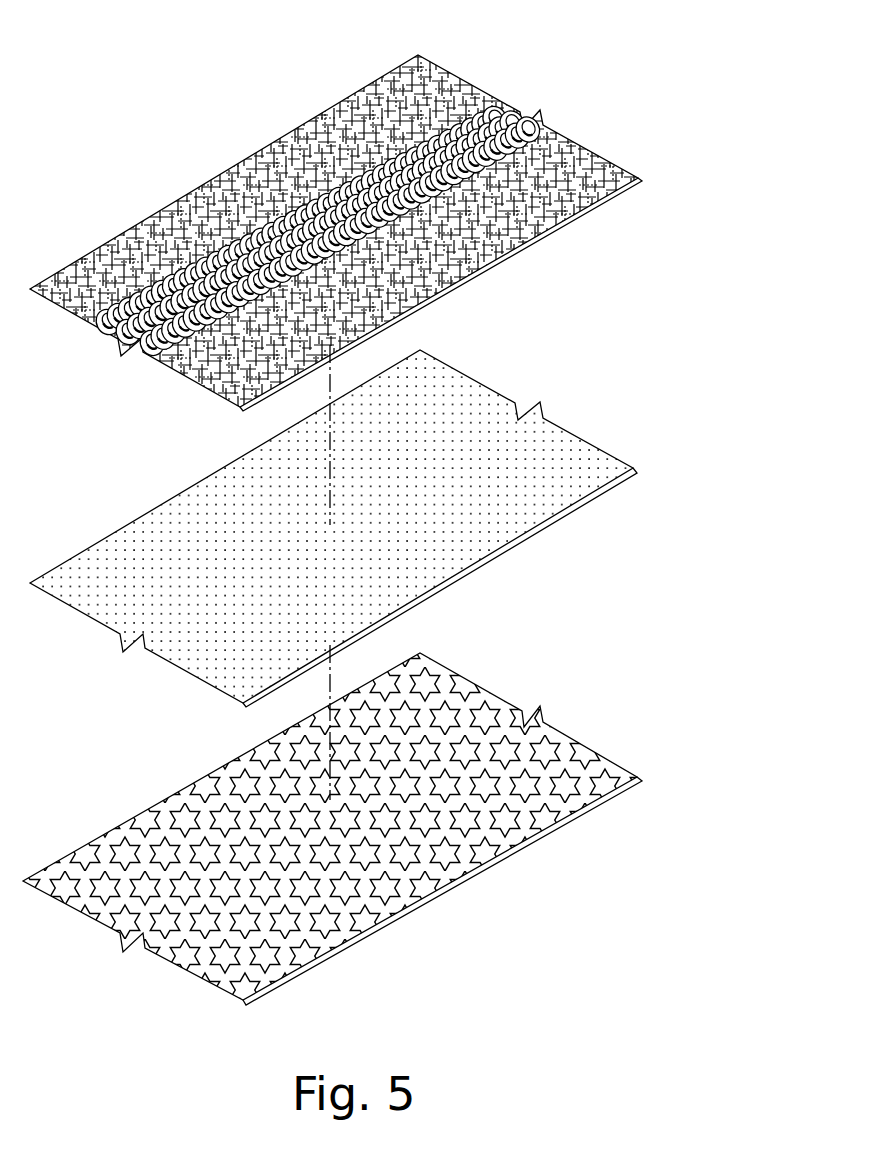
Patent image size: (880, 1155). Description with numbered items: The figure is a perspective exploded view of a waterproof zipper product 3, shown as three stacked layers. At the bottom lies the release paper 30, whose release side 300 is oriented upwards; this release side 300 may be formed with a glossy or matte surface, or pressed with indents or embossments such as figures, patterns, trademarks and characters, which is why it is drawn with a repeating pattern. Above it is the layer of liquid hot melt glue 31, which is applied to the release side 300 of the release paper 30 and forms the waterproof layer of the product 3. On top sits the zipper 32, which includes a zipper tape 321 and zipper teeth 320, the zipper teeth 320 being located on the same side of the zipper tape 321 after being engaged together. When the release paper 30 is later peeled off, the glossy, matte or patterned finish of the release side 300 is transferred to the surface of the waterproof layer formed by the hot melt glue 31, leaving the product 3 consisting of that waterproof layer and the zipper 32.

The waterproof zipper product 3 is at (107, 117).
The zipper 32 is at (401, 233).
The zipper teeth 320 is at (573, 140).
The zipper tape 321 is at (600, 173).
The liquid hot melt glue 31 is at (482, 525).
The release paper 30 is at (332, 829).
The release side 300 is at (507, 822).